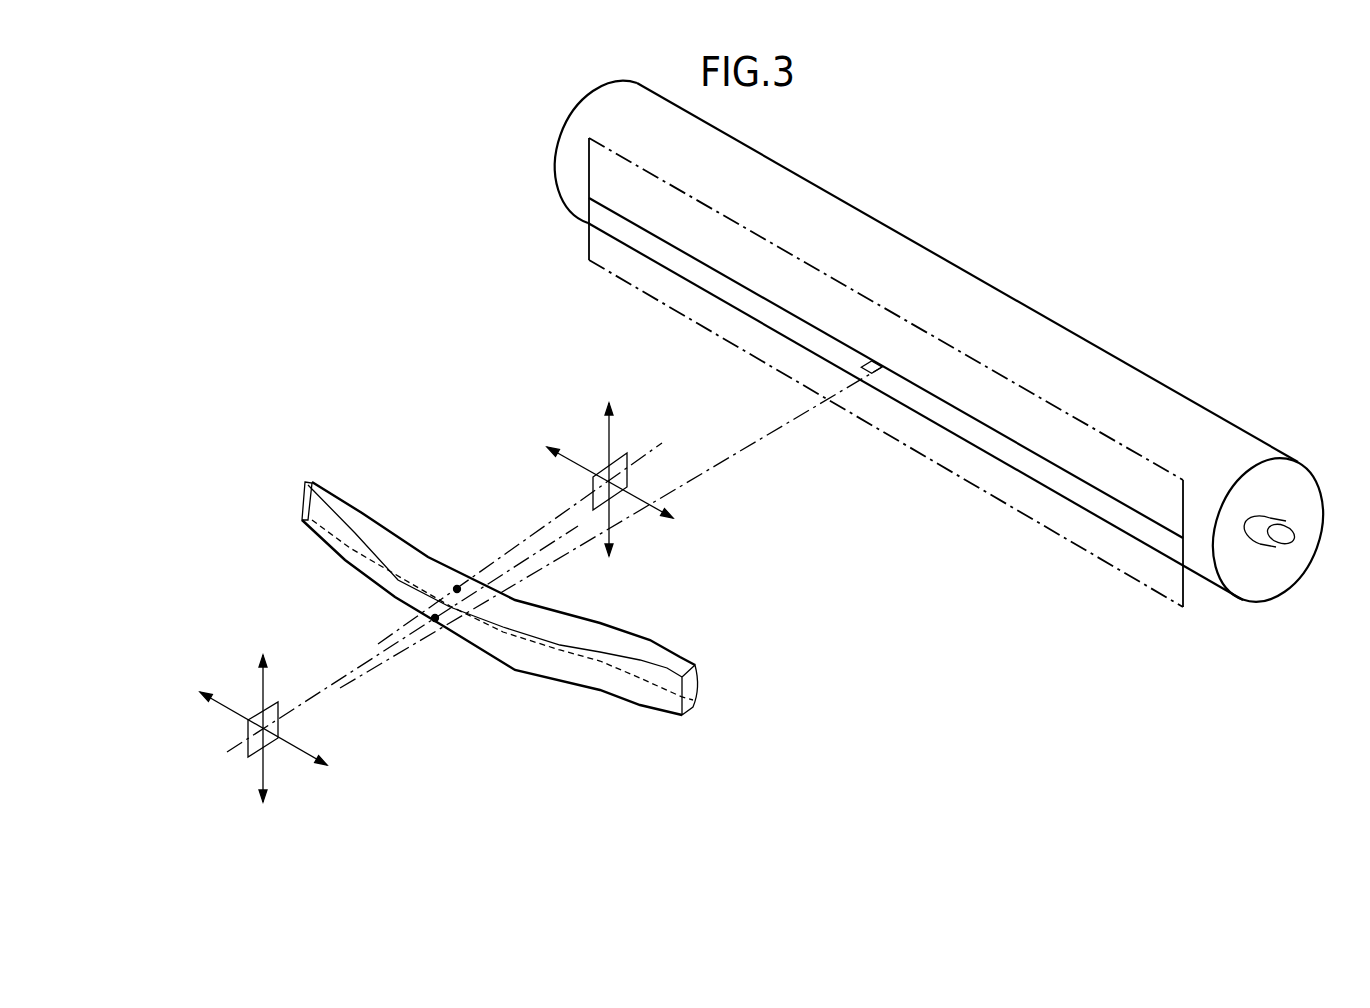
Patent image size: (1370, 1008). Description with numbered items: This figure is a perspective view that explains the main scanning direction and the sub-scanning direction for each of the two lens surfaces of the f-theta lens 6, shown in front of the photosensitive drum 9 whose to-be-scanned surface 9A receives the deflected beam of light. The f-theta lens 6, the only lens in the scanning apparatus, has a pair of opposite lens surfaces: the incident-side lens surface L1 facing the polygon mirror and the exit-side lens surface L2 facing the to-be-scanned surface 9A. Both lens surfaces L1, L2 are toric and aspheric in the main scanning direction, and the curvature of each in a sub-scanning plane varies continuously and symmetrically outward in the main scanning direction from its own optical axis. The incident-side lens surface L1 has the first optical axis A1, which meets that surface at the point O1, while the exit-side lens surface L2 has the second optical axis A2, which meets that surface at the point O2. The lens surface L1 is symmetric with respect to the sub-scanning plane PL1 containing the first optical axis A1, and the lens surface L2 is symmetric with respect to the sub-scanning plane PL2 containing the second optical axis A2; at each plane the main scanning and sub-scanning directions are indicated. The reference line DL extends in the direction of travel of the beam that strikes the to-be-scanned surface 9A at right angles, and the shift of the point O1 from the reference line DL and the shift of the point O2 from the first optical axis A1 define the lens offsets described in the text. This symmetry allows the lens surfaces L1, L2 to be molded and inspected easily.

The photosensitive drum 9 is at (1127, 372).
The to-be-scanned surface 9A is at (622, 177).
The f-theta lens 6 is at (531, 608).
The incident-side lens surface L1 is at (538, 663).
The exit-side lens surface L2 is at (618, 648).
The first optical axis A1 is at (522, 562).
The second optical axis A2 is at (562, 515).
The point of intersection between first optical axis and incident-side lens surface O1 is at (435, 618).
The point of intersection between second optical axis and exit-side lens surface O2 is at (457, 589).
The reference line DL is at (353, 675).
The sub-scanning plane containing first optical axis PL1 is at (278, 702).
The sub-scanning plane containing second optical axis PL2 is at (627, 453).